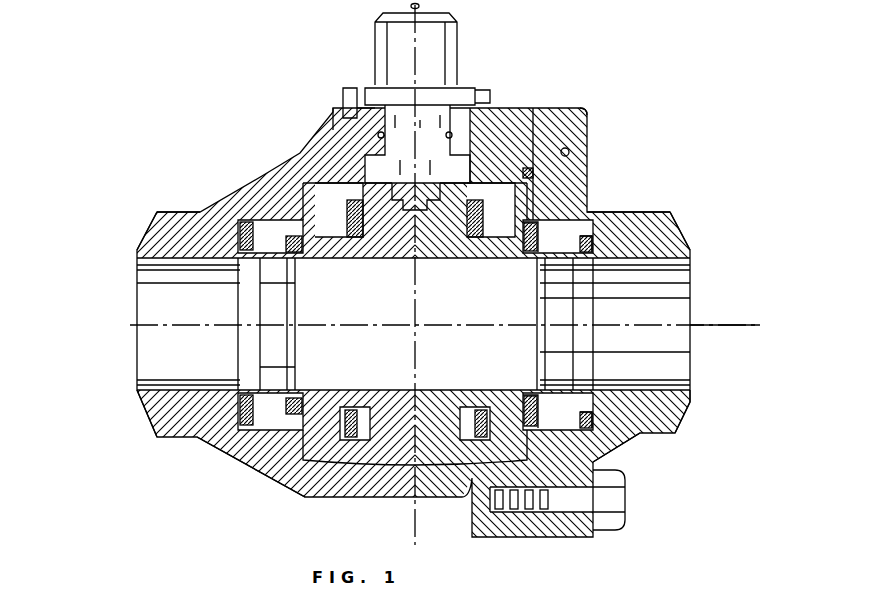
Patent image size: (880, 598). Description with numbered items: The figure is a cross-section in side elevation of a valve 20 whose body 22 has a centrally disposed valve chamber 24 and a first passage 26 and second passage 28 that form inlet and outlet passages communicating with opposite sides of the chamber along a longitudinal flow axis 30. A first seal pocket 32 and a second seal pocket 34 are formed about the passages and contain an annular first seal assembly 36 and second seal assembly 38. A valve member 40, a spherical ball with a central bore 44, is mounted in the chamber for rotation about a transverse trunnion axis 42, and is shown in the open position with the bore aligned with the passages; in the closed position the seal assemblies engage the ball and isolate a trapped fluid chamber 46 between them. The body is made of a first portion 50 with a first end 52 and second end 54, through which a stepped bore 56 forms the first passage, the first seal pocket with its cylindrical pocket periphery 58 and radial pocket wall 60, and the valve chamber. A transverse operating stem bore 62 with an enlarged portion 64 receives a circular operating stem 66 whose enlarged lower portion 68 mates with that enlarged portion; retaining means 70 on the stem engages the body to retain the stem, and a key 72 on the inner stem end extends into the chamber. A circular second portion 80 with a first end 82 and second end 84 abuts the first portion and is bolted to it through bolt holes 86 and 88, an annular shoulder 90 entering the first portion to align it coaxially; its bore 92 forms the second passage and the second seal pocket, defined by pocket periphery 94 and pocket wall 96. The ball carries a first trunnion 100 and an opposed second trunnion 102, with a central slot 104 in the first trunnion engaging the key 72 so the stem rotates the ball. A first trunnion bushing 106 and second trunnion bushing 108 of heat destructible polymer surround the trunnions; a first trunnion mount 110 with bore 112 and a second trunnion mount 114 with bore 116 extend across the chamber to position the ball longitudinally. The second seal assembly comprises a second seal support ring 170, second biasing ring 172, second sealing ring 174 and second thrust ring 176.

The valve 20 is at (508, 63).
The body 22 is at (330, 170).
The valve chamber 24 is at (335, 125).
The first passage 26 is at (160, 344).
The second passage 28 is at (665, 292).
The longitudinal flow axis 30 is at (724, 328).
The first seal pocket 32 is at (255, 200).
The second seal pocket 34 is at (596, 204).
The first seal assembly 36 is at (290, 262).
The second seal assembly 38 is at (575, 262).
The valve member 40 is at (395, 498).
The transverse trunnion axis 42 is at (410, 6).
The central bore 44 is at (305, 392).
The trapped fluid chamber 46 is at (260, 470).
The first portion 50 is at (150, 213).
The first end 52 is at (137, 250).
The second end 54 is at (589, 110).
The bore 56 is at (150, 390).
The pocket periphery 58 is at (285, 222).
The pocket wall 60 is at (262, 237).
The operating stem bore 62 is at (460, 110).
The enlarged portion 64 is at (487, 103).
The operating stem 66 is at (458, 55).
The enlarged lower portion 68 is at (345, 90).
The retaining means 70 is at (366, 98).
The key 72 is at (417, 212).
The second portion 80 is at (672, 222).
The first end 82 is at (570, 153).
The second end 84 is at (690, 250).
The bolt hole 86 is at (492, 508).
The bolt hole 88 is at (570, 512).
The annular shoulder 90 is at (535, 176).
The bore 92 is at (688, 392).
The pocket periphery 94 is at (625, 210).
The pocket wall 96 is at (640, 235).
The first trunnion 100 is at (335, 108).
The second trunnion 102 is at (360, 498).
The central slot 104 is at (400, 210).
The first trunnion bushing 106 is at (340, 263).
The second trunnion bushing 108 is at (360, 395).
The first trunnion mount 110 is at (482, 240).
The bore 112 is at (470, 258).
The second trunnion mount 114 is at (500, 410).
The bore 116 is at (395, 495).
The second seal support ring 170 is at (625, 440).
The second biasing ring 172 is at (692, 400).
The second sealing ring 174 is at (580, 392).
The second thrust ring 176 is at (618, 452).